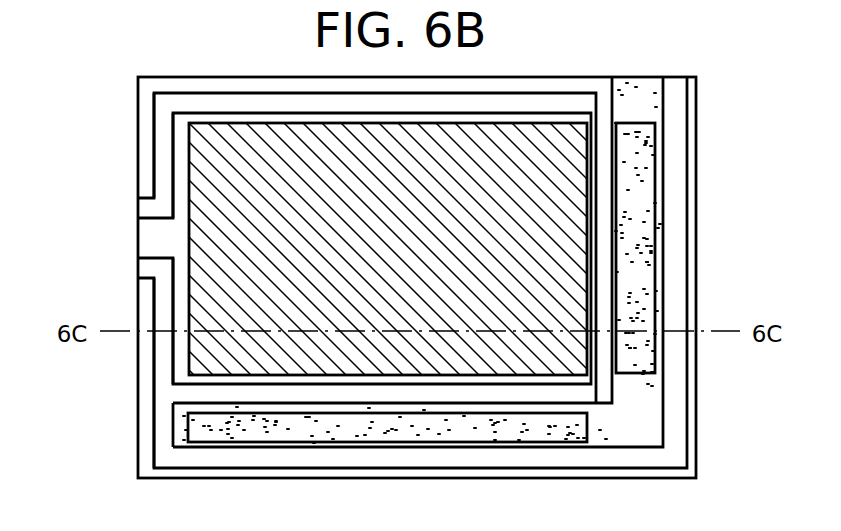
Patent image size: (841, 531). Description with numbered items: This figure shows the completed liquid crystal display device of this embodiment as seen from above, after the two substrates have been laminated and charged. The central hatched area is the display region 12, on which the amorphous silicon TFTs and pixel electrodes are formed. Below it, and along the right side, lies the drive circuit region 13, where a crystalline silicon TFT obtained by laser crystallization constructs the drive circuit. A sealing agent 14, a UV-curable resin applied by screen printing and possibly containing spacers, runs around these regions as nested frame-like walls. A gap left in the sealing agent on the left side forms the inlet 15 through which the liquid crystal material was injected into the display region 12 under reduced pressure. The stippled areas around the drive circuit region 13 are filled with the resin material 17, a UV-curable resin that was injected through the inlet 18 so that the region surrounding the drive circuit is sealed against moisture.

The display region 12 is at (198, 175).
The drive circuit region 13 is at (583, 427).
The sealing agent 14 is at (162, 420).
The inlet for injecting a liquid crystal material 15 is at (158, 240).
The resin material 17 is at (658, 388).
The inlet for injecting a resin 18 is at (651, 99).